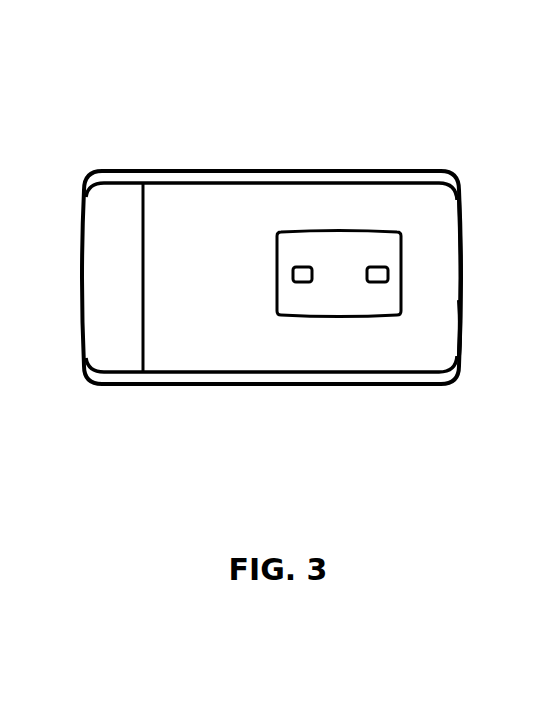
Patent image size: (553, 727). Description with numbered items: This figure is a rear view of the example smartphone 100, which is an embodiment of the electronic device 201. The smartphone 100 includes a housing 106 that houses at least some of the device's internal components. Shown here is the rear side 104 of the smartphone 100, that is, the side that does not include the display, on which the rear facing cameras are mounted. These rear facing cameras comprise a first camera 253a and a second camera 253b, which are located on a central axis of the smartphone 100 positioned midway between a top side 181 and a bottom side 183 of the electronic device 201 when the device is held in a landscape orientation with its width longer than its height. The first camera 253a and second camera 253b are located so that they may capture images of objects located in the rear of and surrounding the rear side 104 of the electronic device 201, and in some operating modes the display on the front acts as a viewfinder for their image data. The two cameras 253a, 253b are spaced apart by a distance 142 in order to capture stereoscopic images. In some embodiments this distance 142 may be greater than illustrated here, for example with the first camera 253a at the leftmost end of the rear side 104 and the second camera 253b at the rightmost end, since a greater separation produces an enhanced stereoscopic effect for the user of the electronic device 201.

The smartphone 100 is at (211, 90).
The electronic device 201 is at (167, 113).
The top side 181 is at (425, 170).
The bottom side 183 is at (160, 386).
The rear side 104 is at (445, 214).
The housing 106 is at (460, 315).
The distance 142 is at (318, 279).
The first camera 253a is at (298, 266).
The second camera 253b is at (372, 266).